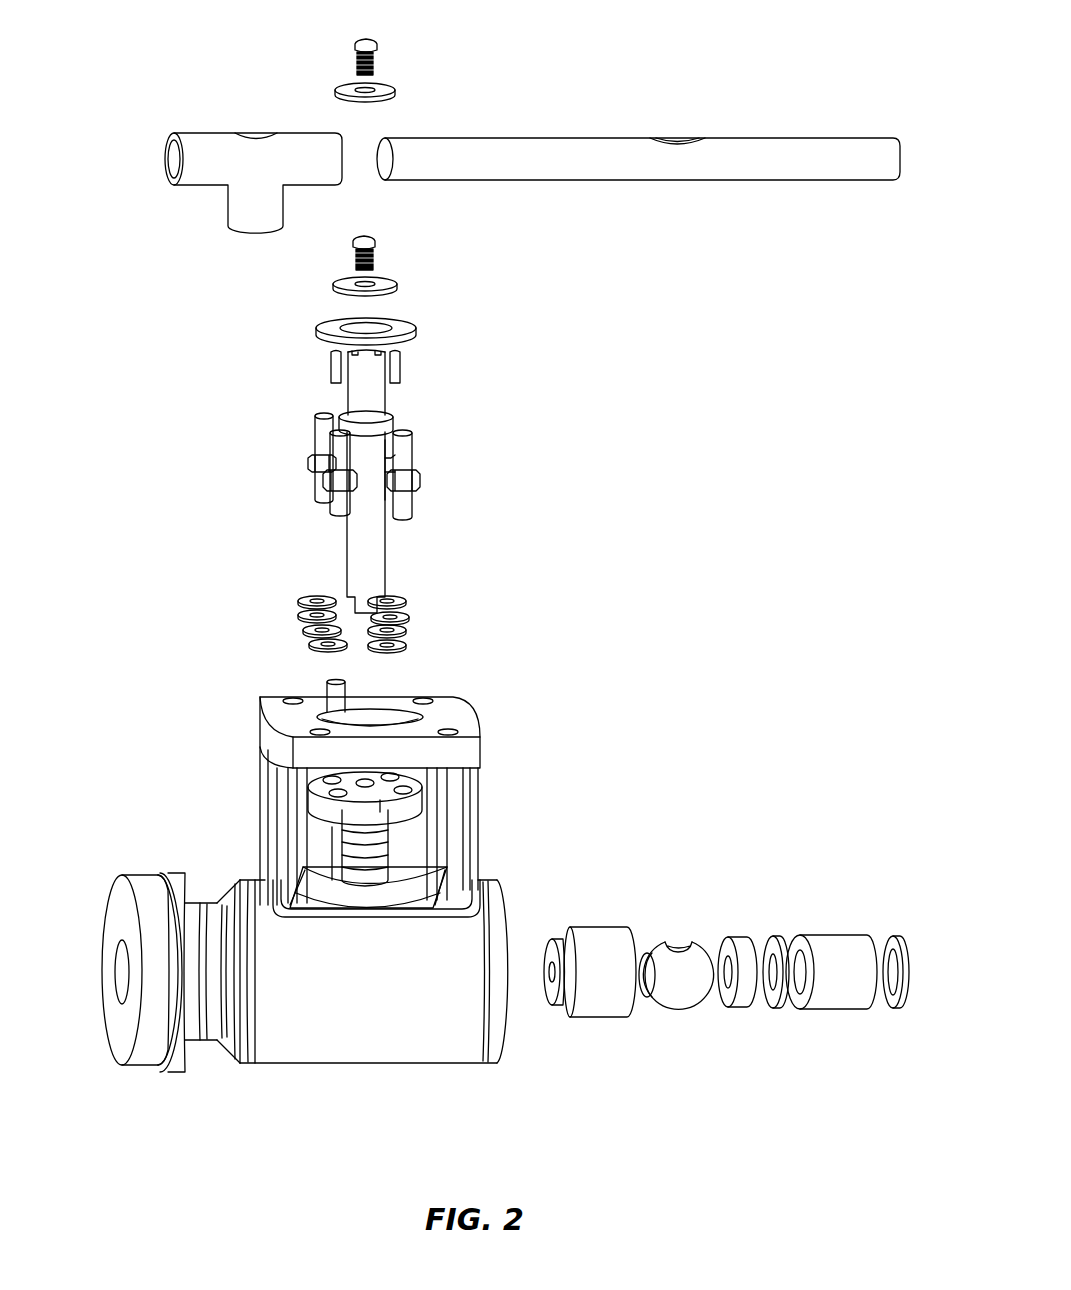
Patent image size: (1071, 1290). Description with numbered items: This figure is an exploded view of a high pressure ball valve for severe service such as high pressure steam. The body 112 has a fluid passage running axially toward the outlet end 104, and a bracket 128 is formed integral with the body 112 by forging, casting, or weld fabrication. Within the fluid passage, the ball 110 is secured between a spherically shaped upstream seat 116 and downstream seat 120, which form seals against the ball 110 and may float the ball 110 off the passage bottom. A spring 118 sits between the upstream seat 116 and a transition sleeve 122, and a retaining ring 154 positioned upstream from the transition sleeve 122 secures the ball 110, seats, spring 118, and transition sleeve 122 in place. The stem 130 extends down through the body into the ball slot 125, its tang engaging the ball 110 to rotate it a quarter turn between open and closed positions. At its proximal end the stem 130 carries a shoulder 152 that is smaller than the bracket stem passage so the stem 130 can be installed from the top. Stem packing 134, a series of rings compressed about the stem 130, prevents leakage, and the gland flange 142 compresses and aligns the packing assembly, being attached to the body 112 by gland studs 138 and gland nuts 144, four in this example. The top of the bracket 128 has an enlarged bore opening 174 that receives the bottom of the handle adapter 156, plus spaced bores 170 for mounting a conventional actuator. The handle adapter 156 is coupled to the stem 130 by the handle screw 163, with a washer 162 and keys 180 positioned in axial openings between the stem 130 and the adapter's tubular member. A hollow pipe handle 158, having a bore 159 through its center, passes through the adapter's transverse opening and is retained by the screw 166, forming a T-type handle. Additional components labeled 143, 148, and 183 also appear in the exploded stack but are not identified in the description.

The outlet end 104 is at (88, 872).
The ball 110 is at (651, 973).
The body 112 is at (345, 1053).
The upstream seat 116 is at (742, 937).
The spring 118 is at (775, 1008).
The downstream seat 120 is at (600, 1013).
The transition sleeve 122 is at (832, 935).
The ball slot 125 is at (676, 945).
The bracket 128 is at (359, 790).
The stem 130 is at (347, 552).
The stem packing 134 is at (330, 850).
The gland studs 138 is at (318, 433).
The gland flange 142 is at (420, 797).
The washers 143 is at (427, 597).
The gland nuts 144 is at (310, 462).
The cap disk 148 is at (316, 330).
The shoulder 152 is at (388, 418).
The retaining ring 154 is at (895, 1008).
The handle adapter 156 is at (186, 133).
The handle 158 is at (629, 145).
The bore 159 is at (665, 138).
The washer 162 is at (398, 284).
The handle screw 163 is at (364, 236).
The screw 166 is at (364, 39).
The spaced bores 170 is at (448, 729).
The enlarged bore opening 174 is at (372, 710).
The keys 180 is at (332, 365).
The pin 183 is at (330, 688).